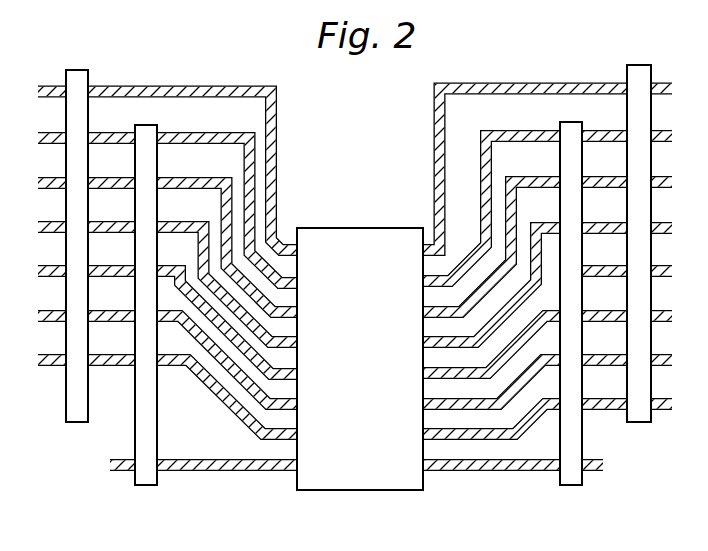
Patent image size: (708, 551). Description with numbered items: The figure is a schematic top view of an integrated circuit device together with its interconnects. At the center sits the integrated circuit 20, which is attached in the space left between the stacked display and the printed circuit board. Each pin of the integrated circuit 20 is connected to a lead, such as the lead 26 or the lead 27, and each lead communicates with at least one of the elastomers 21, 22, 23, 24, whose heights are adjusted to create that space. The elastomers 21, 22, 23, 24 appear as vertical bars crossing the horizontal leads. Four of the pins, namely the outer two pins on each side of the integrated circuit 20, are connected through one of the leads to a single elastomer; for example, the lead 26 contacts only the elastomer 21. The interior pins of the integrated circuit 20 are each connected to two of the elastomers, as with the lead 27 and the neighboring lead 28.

The integrated circuit 20 is at (361, 481).
The elastomer 21 is at (77, 424).
The elastomer 22 is at (146, 487).
The elastomer 23 is at (570, 487).
The elastomer 24 is at (640, 424).
The lead 26 is at (162, 84).
The lead 27 is at (182, 177).
The conductor strip 28 is at (190, 131).